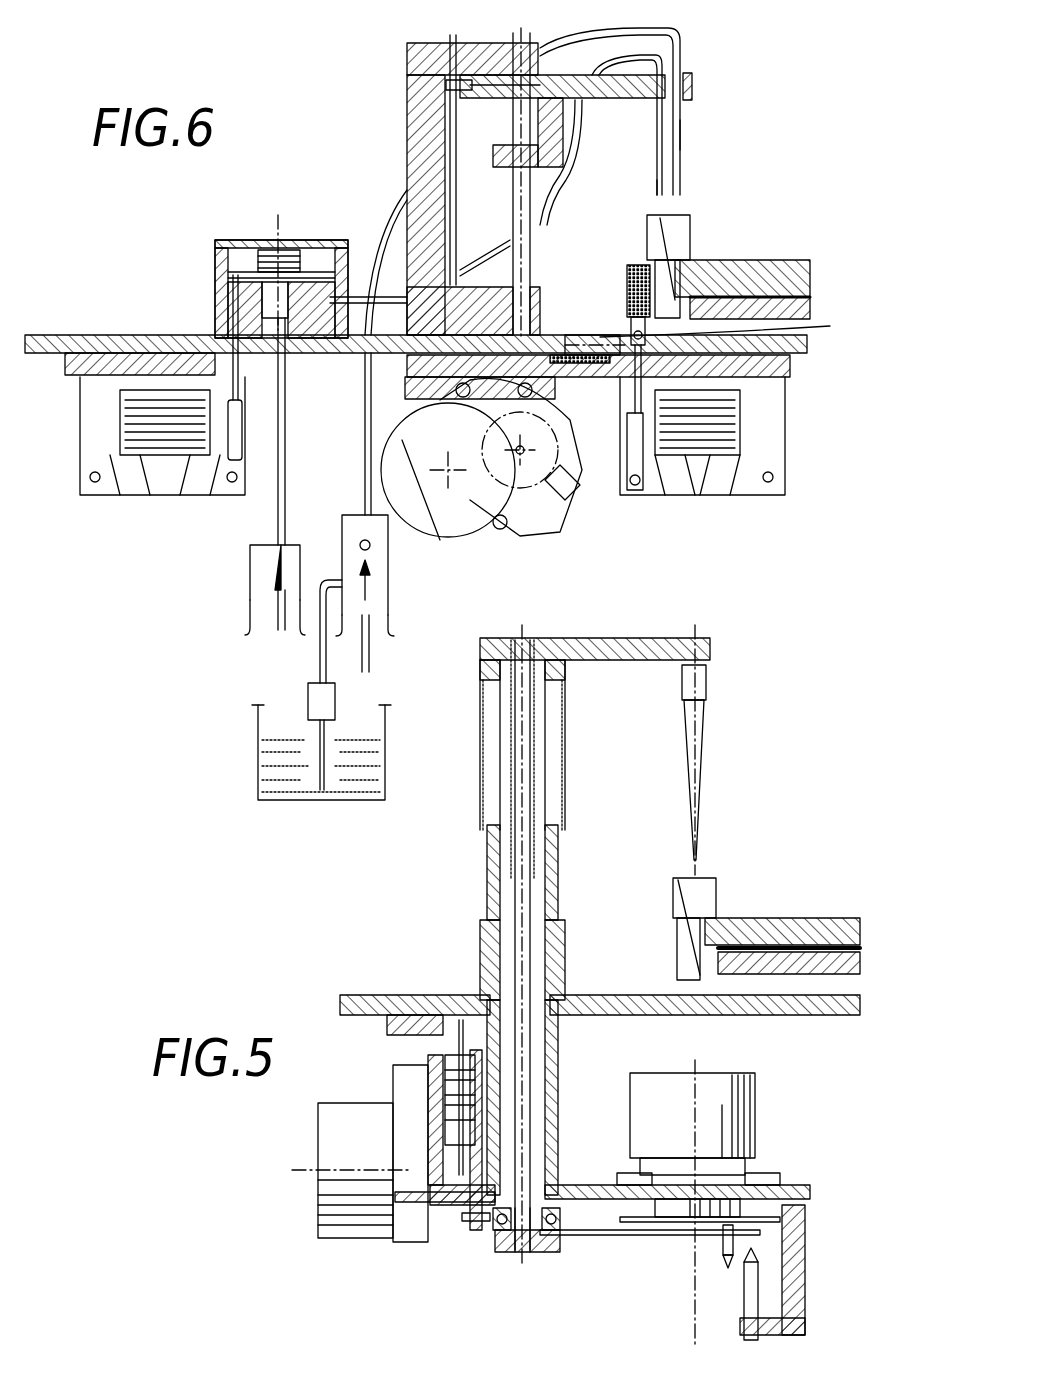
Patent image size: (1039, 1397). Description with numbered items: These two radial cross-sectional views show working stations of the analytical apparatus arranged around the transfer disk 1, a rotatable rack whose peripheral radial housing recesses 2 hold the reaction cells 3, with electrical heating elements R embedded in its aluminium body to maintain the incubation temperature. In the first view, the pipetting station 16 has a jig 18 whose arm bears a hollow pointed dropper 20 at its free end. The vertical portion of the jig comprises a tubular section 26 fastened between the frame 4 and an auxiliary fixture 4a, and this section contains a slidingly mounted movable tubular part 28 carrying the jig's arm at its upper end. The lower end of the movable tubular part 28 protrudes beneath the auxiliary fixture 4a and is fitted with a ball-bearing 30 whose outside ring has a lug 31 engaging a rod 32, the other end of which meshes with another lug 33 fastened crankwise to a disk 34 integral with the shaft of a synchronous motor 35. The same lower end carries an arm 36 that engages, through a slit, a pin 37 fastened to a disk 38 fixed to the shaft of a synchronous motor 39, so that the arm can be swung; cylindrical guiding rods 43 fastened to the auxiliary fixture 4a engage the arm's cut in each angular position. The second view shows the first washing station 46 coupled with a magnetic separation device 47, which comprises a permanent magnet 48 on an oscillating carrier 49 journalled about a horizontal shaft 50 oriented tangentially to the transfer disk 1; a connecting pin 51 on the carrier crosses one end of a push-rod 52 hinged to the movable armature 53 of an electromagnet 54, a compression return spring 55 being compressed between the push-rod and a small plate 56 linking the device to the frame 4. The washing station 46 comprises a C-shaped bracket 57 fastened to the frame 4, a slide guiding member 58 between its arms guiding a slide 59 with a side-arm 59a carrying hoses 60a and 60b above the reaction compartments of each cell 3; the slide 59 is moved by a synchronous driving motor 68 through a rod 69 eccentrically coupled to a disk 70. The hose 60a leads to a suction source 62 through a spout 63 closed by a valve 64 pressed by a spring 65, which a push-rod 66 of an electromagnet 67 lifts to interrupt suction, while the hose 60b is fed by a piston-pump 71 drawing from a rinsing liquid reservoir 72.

In FIG. 6, the transfer disk 1 is at (768, 262).
In FIG. 5, the transfer disk 1 is at (813, 915).
In FIG. 6, the radial housing recess 2 is at (720, 262).
In FIG. 5, the radial housing recess 2 is at (740, 918).
In FIG. 6, the reaction cell 3 is at (690, 235).
In FIG. 5, the reaction cell 3 is at (676, 935).
In FIG. 6, the frame 4 is at (100, 335).
In FIG. 5, the frame 4 is at (352, 995).
In FIG. 5, the auxiliary fixture 4a is at (810, 1185).
In FIG. 6, the electrical heating element R is at (812, 300).
In FIG. 5, the electrical heating element R is at (865, 955).
In FIG. 5, the pipetting station 16 is at (468, 842).
In FIG. 5, the jig 18 is at (634, 638).
In FIG. 5, the hollow pointed dropper 20 is at (706, 765).
In FIG. 5, the tubular section 26 is at (486, 962).
In FIG. 5, the movable tubular part 28 is at (518, 1255).
In FIG. 5, the ball-bearing 30 is at (556, 1215).
In FIG. 5, the lug 31 is at (462, 1218).
In FIG. 5, the rod 32 is at (482, 1125).
In FIG. 5, the lug 33 is at (478, 1062).
In FIG. 5, the disk 34 is at (430, 1048).
In FIG. 5, the synchronous motor 35 is at (318, 1140).
In FIG. 5, the arm 36 is at (595, 1205).
In FIG. 5, the pin 37 is at (722, 1262).
In FIG. 5, the disk 38 is at (790, 1228).
In FIG. 5, the synchronous motor 39 is at (748, 1075).
In FIG. 5, the cylindrical guiding rod 43 is at (745, 1312).
In FIG. 6, the first washing station 46 is at (398, 62).
In FIG. 6, the magnetic separation device 47 is at (608, 243).
In FIG. 6, the permanent magnet 48 is at (635, 265).
In FIG. 6, the oscillating carrier 49 is at (627, 272).
In FIG. 6, the horizontal shaft 50 is at (733, 323).
In FIG. 6, the connecting pin 51 is at (620, 325).
In FIG. 6, the push-rod 52 is at (630, 460).
In FIG. 6, the movable armature 53 is at (662, 480).
In FIG. 6, the electromagnet 54 is at (705, 440).
In FIG. 6, the compression return spring 55 is at (628, 394).
In FIG. 6, the small plate 56 is at (790, 370).
In FIG. 6, the C-shaped bracket 57 is at (407, 128).
In FIG. 6, the slide guiding member 58 is at (512, 115).
In FIG. 6, the slide 59 is at (614, 98).
In FIG. 6, the side-arm 59a is at (692, 85).
In FIG. 6, the hose 60a is at (658, 185).
In FIG. 6, the hose 60b is at (684, 133).
In FIG. 6, the suction source 62 is at (250, 575).
In FIG. 6, the spout 63 is at (293, 350).
In FIG. 6, the valve 64 is at (325, 240).
In FIG. 6, the spring 65 is at (262, 240).
In FIG. 6, the push-rod 66 is at (244, 400).
In FIG. 6, the electromagnet 67 is at (150, 440).
In FIG. 6, the synchronous driving motor 68 is at (452, 522).
In FIG. 6, the rod 69 is at (503, 218).
In FIG. 6, the disk 70 is at (572, 462).
In FIG. 6, the piston-pump 71 is at (388, 578).
In FIG. 6, the rinsing liquid reservoir 72 is at (260, 760).